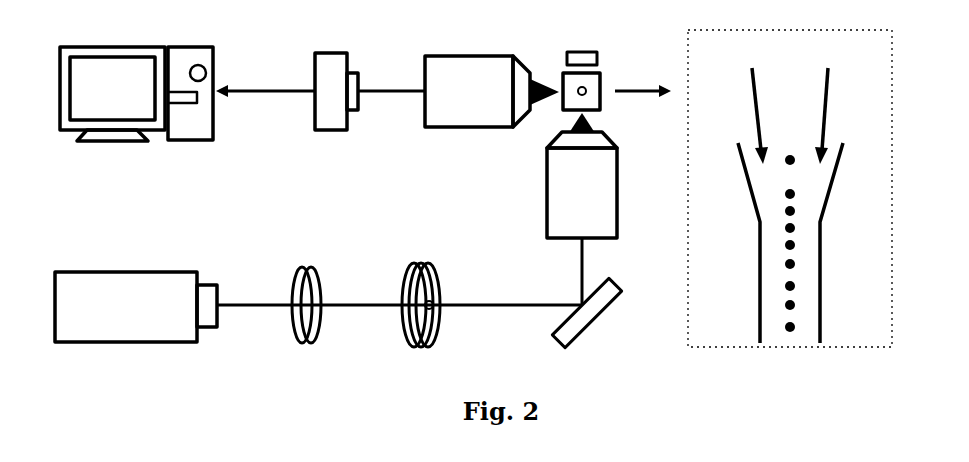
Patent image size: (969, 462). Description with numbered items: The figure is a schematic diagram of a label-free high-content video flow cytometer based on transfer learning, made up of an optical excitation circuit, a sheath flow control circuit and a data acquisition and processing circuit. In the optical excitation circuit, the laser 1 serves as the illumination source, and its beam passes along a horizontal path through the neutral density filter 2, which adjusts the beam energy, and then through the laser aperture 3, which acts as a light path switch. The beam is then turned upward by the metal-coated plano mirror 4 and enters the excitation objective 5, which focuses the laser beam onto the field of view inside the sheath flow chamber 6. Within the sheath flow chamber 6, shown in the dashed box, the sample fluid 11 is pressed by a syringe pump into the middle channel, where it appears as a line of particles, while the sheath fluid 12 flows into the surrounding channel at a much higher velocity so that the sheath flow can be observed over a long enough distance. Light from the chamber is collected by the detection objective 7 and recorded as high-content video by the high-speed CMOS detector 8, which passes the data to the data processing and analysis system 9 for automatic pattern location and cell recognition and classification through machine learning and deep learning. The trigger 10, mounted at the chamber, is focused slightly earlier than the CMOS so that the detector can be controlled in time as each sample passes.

The laser 1 is at (136, 285).
The neutral density filter 2 is at (306, 286).
The laser aperture 3 is at (421, 288).
The mirror 4 is at (584, 307).
The excitation objective 5 is at (566, 185).
The sheath flow chamber 6 is at (569, 106).
The detection objective 7 is at (477, 116).
The high-speed CMOS detector 8 is at (340, 114).
The data processing and analysis system 9 is at (136, 116).
The trigger 10 is at (619, 68).
The sample fluid 11 is at (788, 140).
The sheath fluid 12 is at (822, 66).